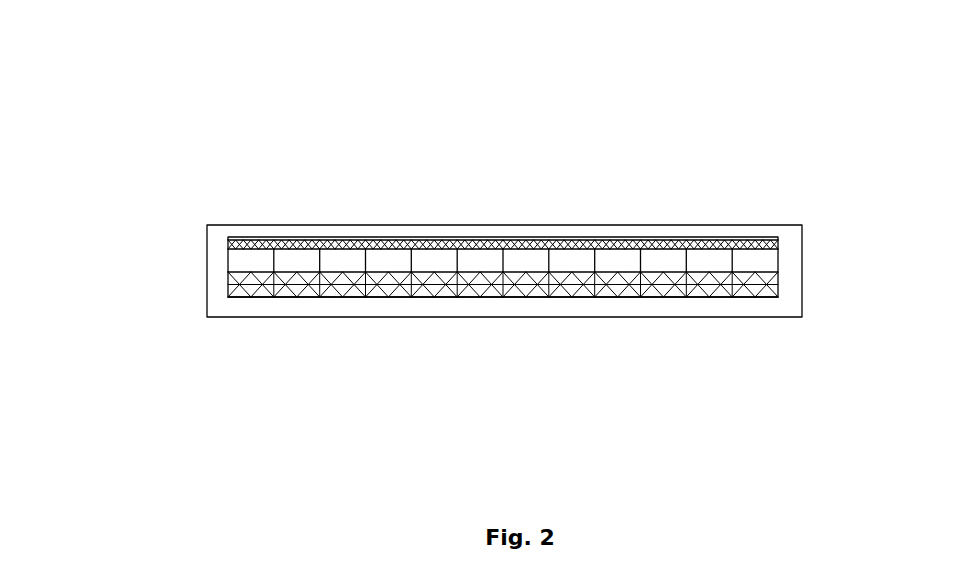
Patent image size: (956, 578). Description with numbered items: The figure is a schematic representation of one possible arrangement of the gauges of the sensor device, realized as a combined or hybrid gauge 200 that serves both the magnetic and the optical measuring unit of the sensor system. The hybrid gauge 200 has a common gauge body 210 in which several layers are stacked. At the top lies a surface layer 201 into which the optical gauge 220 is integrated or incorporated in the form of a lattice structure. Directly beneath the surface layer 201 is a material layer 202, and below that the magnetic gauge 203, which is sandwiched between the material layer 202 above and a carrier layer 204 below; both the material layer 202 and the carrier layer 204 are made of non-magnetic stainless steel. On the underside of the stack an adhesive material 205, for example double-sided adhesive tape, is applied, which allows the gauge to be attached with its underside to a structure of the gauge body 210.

The hybrid gauge 200 is at (287, 208).
The gauge body 210 is at (218, 272).
The optical gauge 220 is at (523, 238).
The surface layer 201 is at (432, 238).
The material layer 202 is at (741, 244).
The magnetic gauge 203 is at (623, 253).
The carrier layer 204 is at (345, 282).
The adhesive material 205 is at (532, 296).